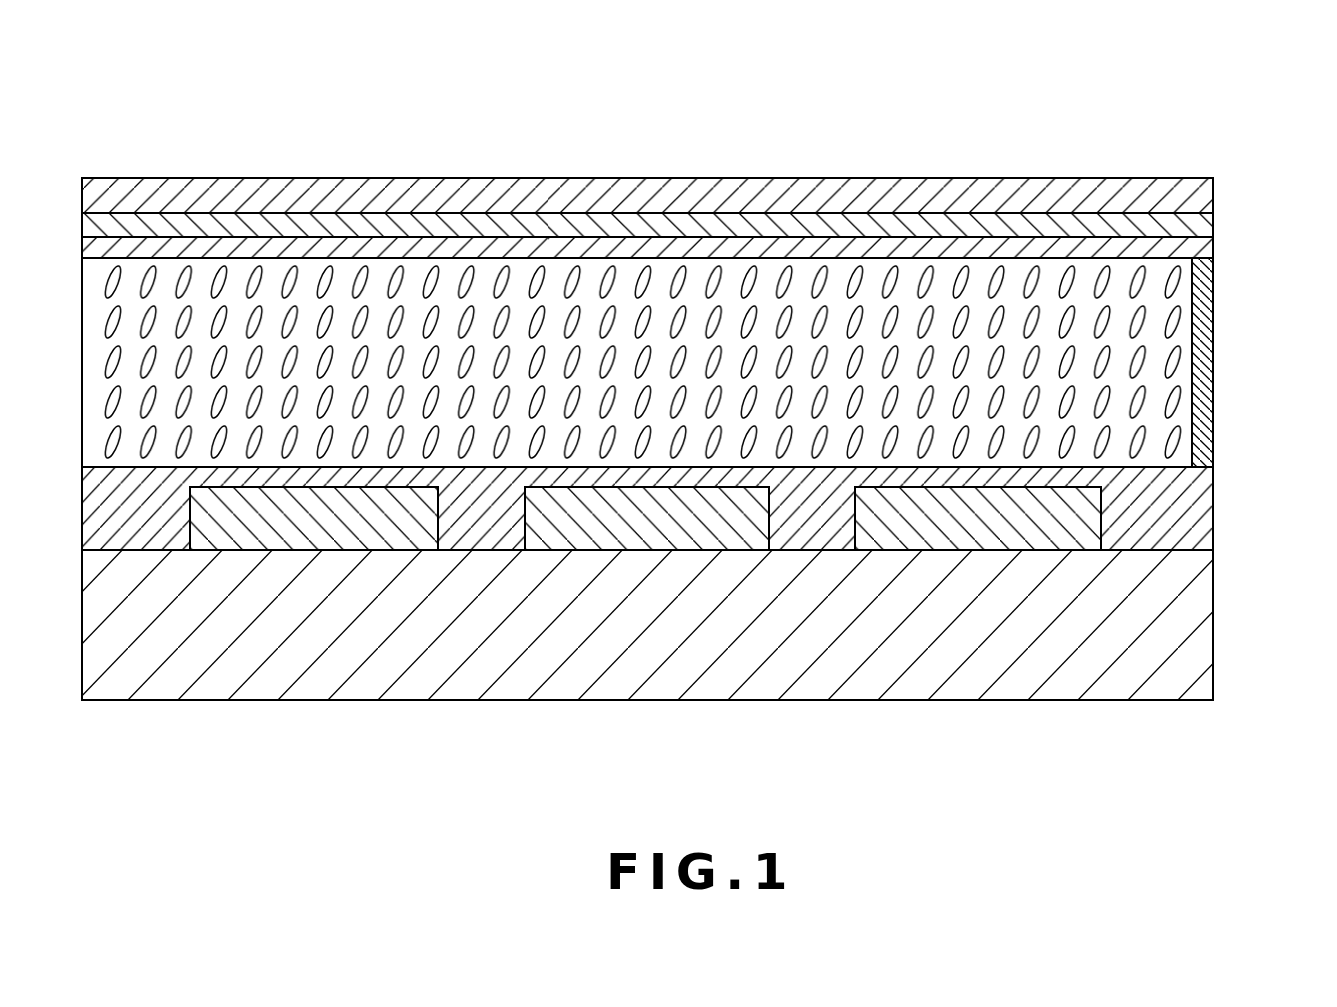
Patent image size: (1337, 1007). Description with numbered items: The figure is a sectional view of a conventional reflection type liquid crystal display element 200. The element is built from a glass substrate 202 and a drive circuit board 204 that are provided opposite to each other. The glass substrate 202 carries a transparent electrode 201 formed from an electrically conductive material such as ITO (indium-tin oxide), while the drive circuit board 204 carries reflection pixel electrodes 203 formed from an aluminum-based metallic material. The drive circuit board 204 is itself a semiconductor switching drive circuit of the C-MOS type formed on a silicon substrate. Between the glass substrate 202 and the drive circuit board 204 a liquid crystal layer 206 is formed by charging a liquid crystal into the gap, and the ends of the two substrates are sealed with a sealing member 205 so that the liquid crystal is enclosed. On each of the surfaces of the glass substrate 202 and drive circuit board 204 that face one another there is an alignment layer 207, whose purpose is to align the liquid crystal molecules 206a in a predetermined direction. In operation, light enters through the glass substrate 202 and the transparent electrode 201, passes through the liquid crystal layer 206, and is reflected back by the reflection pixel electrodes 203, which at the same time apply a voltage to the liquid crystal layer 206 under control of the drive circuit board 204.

The reflection type liquid crystal display element 200 is at (709, 386).
The transparent electrode 201 is at (1193, 223).
The glass substrate 202 is at (1205, 196).
The reflection pixel electrodes 203 is at (626, 515).
The drive circuit board 204 is at (1180, 623).
The sealing member 205 is at (1203, 373).
The liquid crystal layer 206 is at (1165, 314).
The liquid crystal molecules 206a is at (1185, 432).
The alignment layer 207 is at (1187, 498).